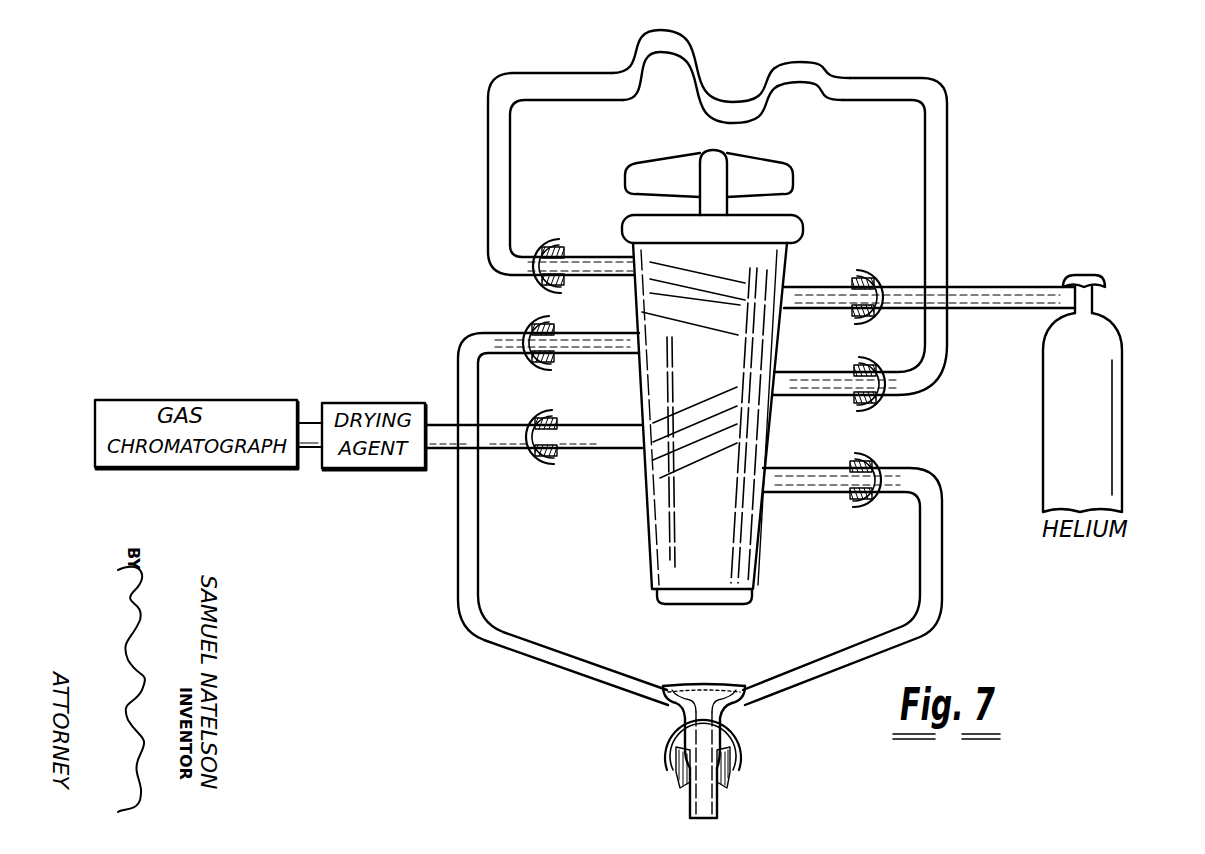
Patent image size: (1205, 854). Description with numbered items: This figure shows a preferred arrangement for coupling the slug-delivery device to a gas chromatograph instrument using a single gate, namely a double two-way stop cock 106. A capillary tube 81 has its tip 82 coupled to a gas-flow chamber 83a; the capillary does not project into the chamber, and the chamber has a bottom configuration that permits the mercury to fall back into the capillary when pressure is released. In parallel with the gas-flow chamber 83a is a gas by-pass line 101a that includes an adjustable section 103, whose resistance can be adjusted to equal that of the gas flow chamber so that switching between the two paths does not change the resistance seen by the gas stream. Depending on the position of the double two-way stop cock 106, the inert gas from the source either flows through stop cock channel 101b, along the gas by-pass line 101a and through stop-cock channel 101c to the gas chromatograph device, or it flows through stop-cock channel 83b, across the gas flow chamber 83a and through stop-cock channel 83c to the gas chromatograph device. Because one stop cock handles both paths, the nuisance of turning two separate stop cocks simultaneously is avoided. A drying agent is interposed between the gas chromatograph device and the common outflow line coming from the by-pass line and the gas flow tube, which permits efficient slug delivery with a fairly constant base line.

The gas by-pass line 101a is at (950, 131).
The adjustable section 103 is at (710, 63).
The double two-way stop cock 106 is at (792, 224).
The stop cock channel 101b is at (688, 273).
The stop-cock channel 83b is at (719, 326).
The stop-cock channel 101c is at (698, 412).
The stop-cock channel 83c is at (709, 458).
The tip 82 is at (716, 687).
The gas-flow chamber 83a is at (684, 687).
The capillary tube 81 is at (724, 730).